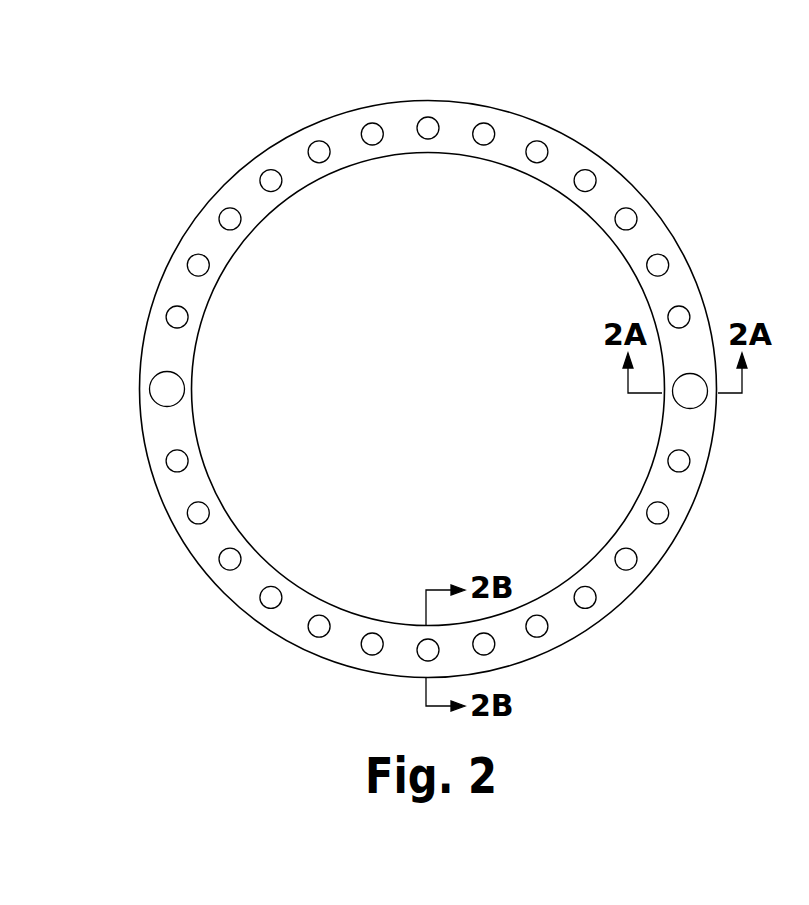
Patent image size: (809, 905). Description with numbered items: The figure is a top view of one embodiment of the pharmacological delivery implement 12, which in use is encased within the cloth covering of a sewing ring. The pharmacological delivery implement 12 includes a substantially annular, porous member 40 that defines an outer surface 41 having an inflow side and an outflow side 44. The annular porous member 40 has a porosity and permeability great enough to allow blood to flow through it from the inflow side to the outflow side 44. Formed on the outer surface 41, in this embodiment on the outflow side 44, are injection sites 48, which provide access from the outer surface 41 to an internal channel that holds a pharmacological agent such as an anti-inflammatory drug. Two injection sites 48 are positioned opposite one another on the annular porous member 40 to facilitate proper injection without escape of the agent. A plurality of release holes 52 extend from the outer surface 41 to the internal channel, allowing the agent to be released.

The pharmacological delivery implement 12 is at (672, 150).
The annular porous member 40 is at (681, 263).
The outer surface 41 is at (648, 237).
The outflow side 44 is at (568, 160).
The injection site 48 is at (185, 391).
The release holes 52 is at (548, 629).